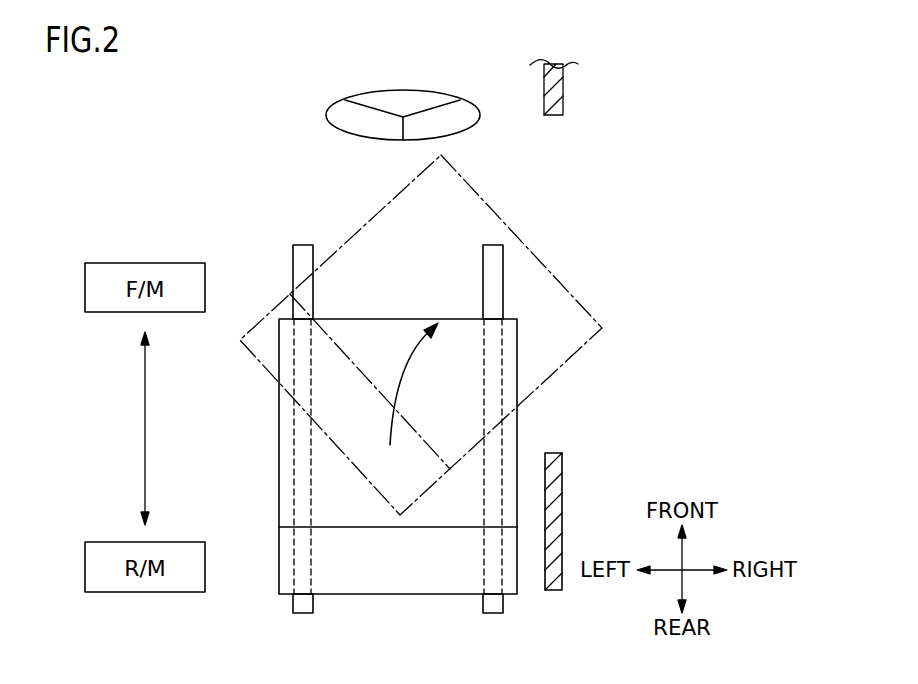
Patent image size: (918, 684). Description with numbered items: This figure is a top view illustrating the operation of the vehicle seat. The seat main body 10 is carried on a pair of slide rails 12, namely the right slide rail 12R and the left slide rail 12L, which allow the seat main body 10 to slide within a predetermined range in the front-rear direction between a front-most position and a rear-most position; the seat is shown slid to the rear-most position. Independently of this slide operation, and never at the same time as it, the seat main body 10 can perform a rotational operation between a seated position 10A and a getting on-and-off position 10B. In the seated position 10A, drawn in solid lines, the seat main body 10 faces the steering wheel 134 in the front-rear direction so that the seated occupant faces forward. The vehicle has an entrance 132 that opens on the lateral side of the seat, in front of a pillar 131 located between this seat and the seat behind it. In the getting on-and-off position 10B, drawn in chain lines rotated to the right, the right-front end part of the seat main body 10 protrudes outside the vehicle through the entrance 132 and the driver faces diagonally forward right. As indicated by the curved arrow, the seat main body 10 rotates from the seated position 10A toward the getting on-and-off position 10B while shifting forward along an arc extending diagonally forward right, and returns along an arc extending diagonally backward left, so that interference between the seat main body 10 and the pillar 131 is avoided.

The seat main body 10 is at (456, 397).
The seated position 10A is at (422, 595).
The getting on-and-off position 10B is at (548, 383).
The slide rails 12 is at (416, 409).
The left slide rail 12L is at (302, 265).
The right slide rail 12R is at (492, 273).
The pillar 131 is at (555, 497).
The entrance 132 is at (582, 509).
The steering wheel 134 is at (327, 115).